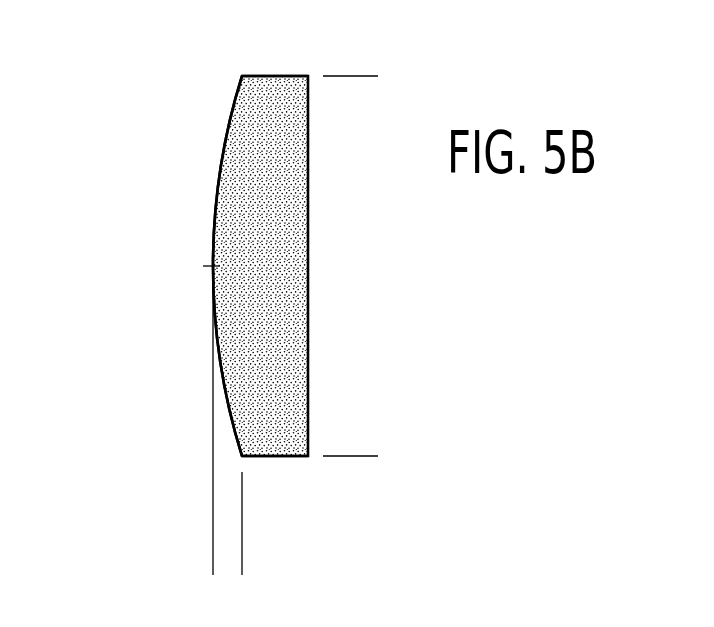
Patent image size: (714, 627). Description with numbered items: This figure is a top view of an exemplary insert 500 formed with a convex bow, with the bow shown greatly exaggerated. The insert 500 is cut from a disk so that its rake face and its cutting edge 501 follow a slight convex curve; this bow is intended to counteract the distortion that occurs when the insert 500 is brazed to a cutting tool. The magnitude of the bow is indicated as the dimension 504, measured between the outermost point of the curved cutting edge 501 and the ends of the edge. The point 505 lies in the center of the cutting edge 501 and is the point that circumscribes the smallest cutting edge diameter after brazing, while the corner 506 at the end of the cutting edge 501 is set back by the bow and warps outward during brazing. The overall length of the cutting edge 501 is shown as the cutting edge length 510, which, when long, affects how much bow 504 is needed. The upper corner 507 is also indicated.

The insert 500 is at (406, 57).
The cutting edge 501 is at (148, 266).
The amount of bow 504 is at (160, 567).
The center point of the cutting edge 505 is at (137, 234).
The corner 506 is at (337, 499).
The top edge 507 is at (185, 53).
The cutting edge length 510 is at (372, 76).